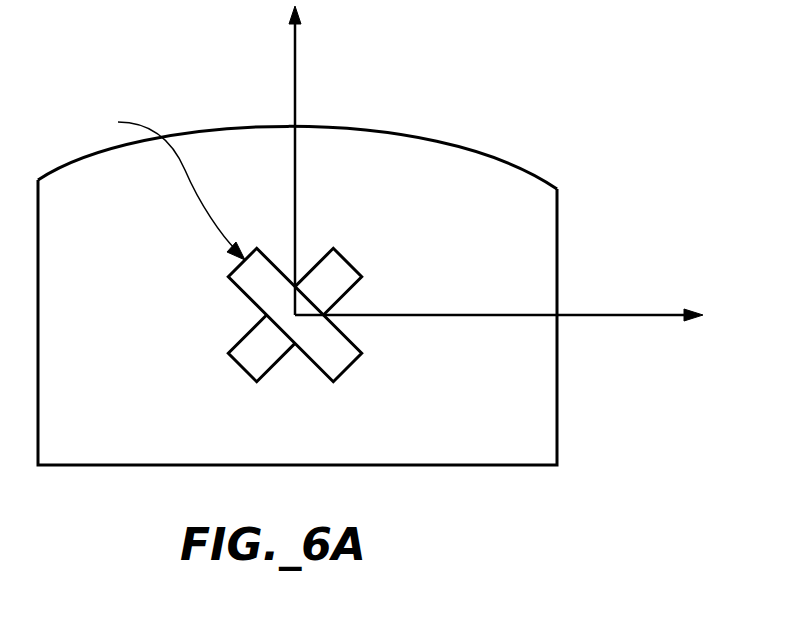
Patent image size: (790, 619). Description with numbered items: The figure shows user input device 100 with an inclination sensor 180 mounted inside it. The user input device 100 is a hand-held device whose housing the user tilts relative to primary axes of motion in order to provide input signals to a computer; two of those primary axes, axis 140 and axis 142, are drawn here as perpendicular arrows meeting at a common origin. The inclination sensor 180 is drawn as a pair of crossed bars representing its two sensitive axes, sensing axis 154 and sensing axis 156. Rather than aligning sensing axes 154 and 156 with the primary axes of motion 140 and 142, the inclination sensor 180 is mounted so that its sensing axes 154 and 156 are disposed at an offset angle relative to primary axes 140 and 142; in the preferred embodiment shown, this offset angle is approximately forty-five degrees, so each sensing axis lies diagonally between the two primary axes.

The user input device 100 is at (482, 150).
The primary axis of motion 140 is at (296, 99).
The primary axis of motion 142 is at (585, 313).
The sensing axis 154 is at (353, 367).
The sensing axis 156 is at (243, 367).
The inclination sensor 180 is at (157, 185).